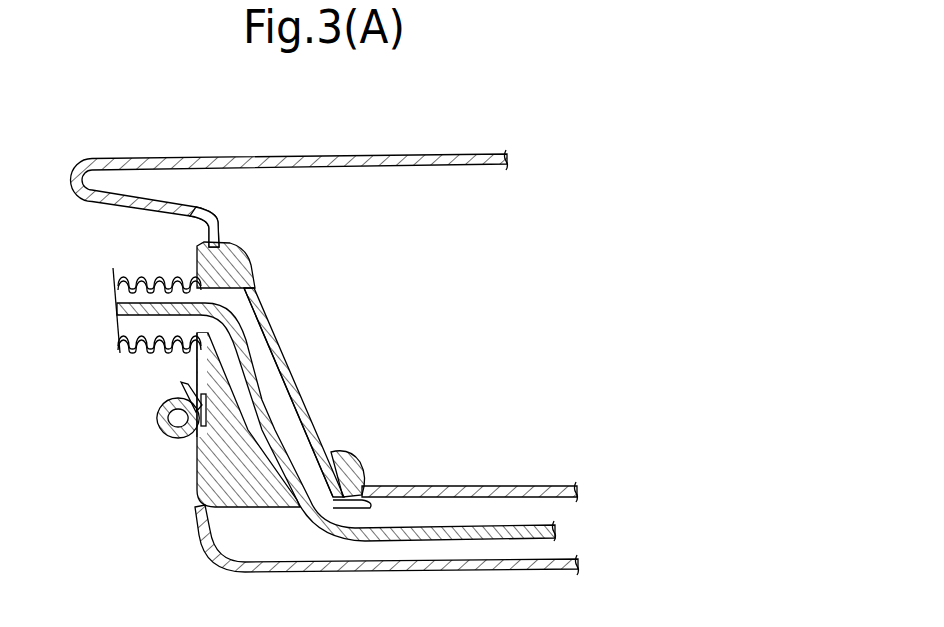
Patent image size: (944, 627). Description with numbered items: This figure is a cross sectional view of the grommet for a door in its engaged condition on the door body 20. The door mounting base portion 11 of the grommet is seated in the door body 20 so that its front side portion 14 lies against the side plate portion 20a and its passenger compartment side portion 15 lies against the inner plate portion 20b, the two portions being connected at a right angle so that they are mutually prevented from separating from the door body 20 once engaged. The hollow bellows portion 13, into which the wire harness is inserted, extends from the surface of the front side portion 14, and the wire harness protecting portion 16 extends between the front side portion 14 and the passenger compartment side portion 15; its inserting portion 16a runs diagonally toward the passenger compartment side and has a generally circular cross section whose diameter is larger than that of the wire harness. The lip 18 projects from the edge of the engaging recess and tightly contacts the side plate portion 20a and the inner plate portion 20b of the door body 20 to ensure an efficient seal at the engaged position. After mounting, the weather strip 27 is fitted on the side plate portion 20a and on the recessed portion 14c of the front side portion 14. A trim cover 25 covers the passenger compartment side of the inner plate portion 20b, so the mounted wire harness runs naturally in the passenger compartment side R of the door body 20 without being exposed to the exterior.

The door mounting base portion 11 is at (332, 396).
The bellows portion 13 is at (124, 371).
The front side portion 14 is at (197, 358).
The recessed portion 14c is at (190, 440).
The passenger compartment side portion 15 is at (238, 508).
The wire harness protecting portion 16 is at (262, 305).
The inserting portion 16a is at (315, 424).
The lip 18 is at (195, 241).
The door body 20 is at (403, 154).
The side plate portion 20a is at (205, 232).
The inner plate portion 20b is at (465, 486).
The trim cover 25 is at (186, 543).
The weather strip 27 is at (156, 417).
The passenger compartment side R is at (474, 603).